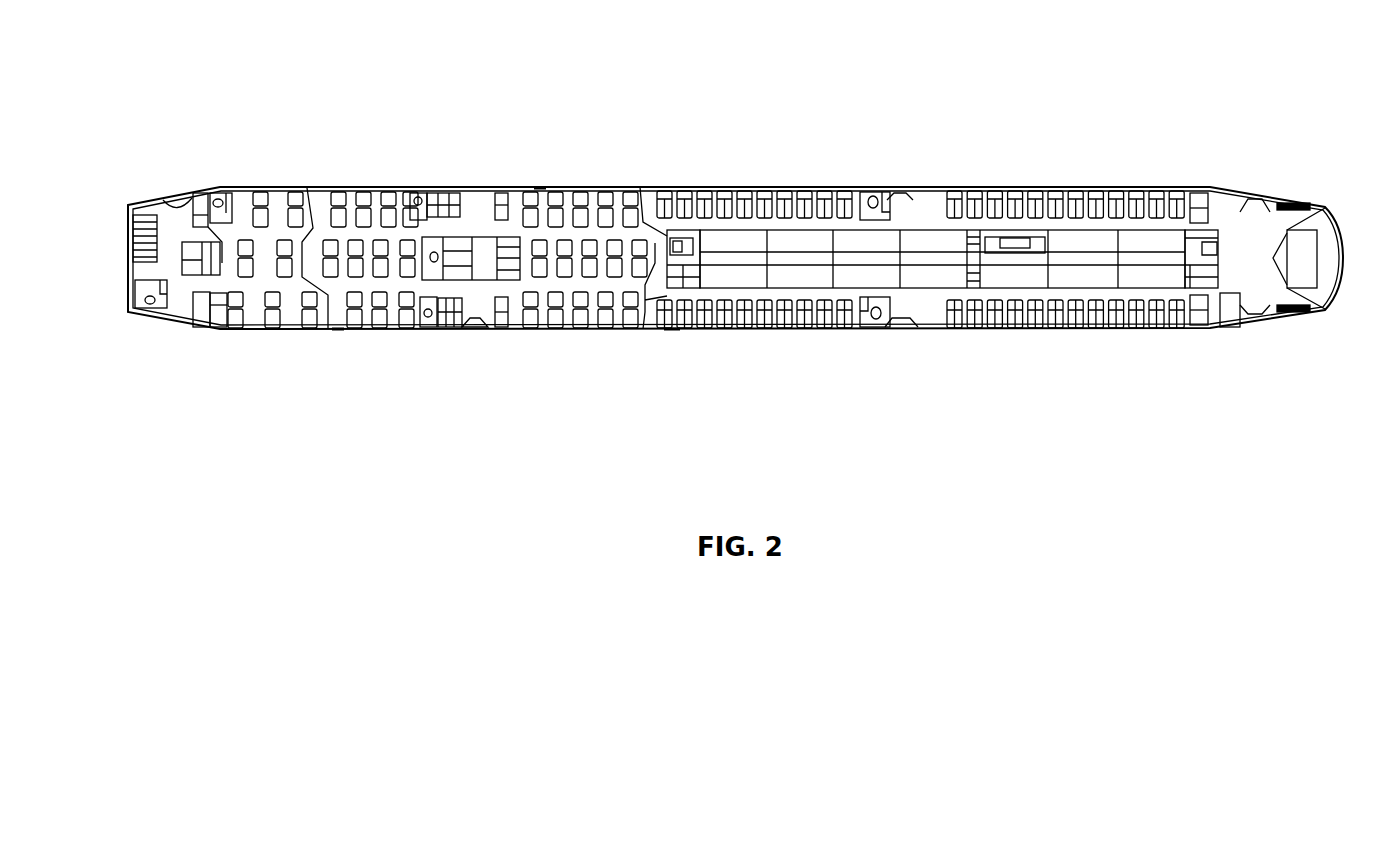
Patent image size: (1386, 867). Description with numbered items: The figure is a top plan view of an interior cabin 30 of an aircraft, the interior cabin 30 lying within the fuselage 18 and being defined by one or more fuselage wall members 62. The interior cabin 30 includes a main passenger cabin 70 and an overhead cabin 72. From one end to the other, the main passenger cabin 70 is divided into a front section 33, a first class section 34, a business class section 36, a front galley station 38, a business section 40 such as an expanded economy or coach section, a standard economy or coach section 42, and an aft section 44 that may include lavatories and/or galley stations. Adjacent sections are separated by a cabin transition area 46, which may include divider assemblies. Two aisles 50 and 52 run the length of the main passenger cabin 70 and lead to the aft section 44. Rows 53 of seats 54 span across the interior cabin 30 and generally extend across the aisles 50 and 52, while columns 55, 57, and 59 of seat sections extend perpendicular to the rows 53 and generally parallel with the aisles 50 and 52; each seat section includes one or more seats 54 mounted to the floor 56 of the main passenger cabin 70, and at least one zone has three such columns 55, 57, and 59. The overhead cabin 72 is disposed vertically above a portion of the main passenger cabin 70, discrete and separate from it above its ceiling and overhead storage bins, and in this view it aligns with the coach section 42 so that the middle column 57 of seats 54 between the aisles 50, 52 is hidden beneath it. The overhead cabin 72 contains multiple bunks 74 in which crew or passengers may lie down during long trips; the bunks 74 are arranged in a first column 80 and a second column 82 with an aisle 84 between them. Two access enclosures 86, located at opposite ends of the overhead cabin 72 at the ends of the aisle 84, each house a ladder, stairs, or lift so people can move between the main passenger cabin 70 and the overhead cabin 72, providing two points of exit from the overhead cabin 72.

The interior cabin 30 is at (266, 95).
The fuselage 18 is at (595, 150).
The front section 33 is at (186, 343).
The first class section 34 is at (290, 338).
The business class section 36 is at (352, 186).
The front galley station 38 is at (477, 338).
The business section 40 is at (573, 338).
The coach section 42 is at (715, 185).
The aft section 44 is at (1268, 189).
The cabin transition area 46 is at (205, 188).
The aisle 50 is at (1057, 224).
The aisle 52 is at (1075, 292).
The rows 53 is at (673, 341).
The seats 54 is at (665, 320).
The column 55 is at (630, 310).
The floor 56 is at (526, 306).
The middle column 57 is at (690, 240).
The column 59 is at (649, 232).
The fuselage wall members 62 is at (540, 188).
The main passenger cabin 70 is at (472, 216).
The overhead cabin 72 is at (926, 226).
The bunks 74 is at (887, 243).
The first column 80 is at (1166, 291).
The second column 82 is at (1168, 226).
The aisle 84 is at (1123, 258).
The access enclosure 86 is at (693, 278).